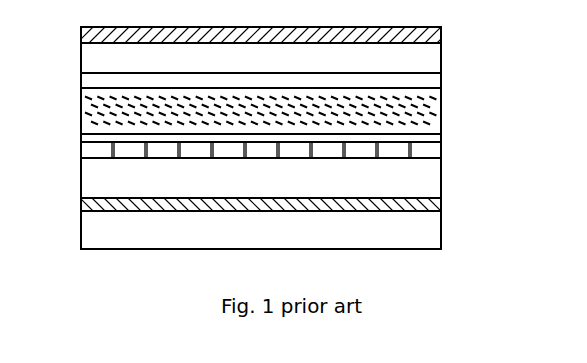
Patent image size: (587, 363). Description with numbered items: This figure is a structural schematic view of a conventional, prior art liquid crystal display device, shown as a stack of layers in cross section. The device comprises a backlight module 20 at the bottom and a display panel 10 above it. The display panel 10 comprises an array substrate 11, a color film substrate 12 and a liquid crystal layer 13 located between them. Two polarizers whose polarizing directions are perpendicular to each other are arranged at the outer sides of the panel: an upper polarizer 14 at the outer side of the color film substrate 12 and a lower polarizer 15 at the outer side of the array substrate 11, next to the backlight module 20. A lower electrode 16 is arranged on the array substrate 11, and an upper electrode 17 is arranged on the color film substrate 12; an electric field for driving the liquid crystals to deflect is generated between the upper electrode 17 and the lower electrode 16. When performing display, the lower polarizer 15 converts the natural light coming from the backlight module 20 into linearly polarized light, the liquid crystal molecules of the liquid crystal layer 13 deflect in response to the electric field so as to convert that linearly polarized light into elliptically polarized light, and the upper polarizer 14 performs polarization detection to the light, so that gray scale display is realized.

The display panel 10 is at (490, 37).
The array substrate 11 is at (436, 183).
The color film substrate 12 is at (430, 58).
The liquid crystal layer 13 is at (447, 96).
The upper polarizer 14 is at (430, 35).
The lower polarizer 15 is at (436, 207).
The lower electrode 16 is at (441, 150).
The upper electrode 17 is at (430, 82).
The backlight module 20 is at (90, 233).